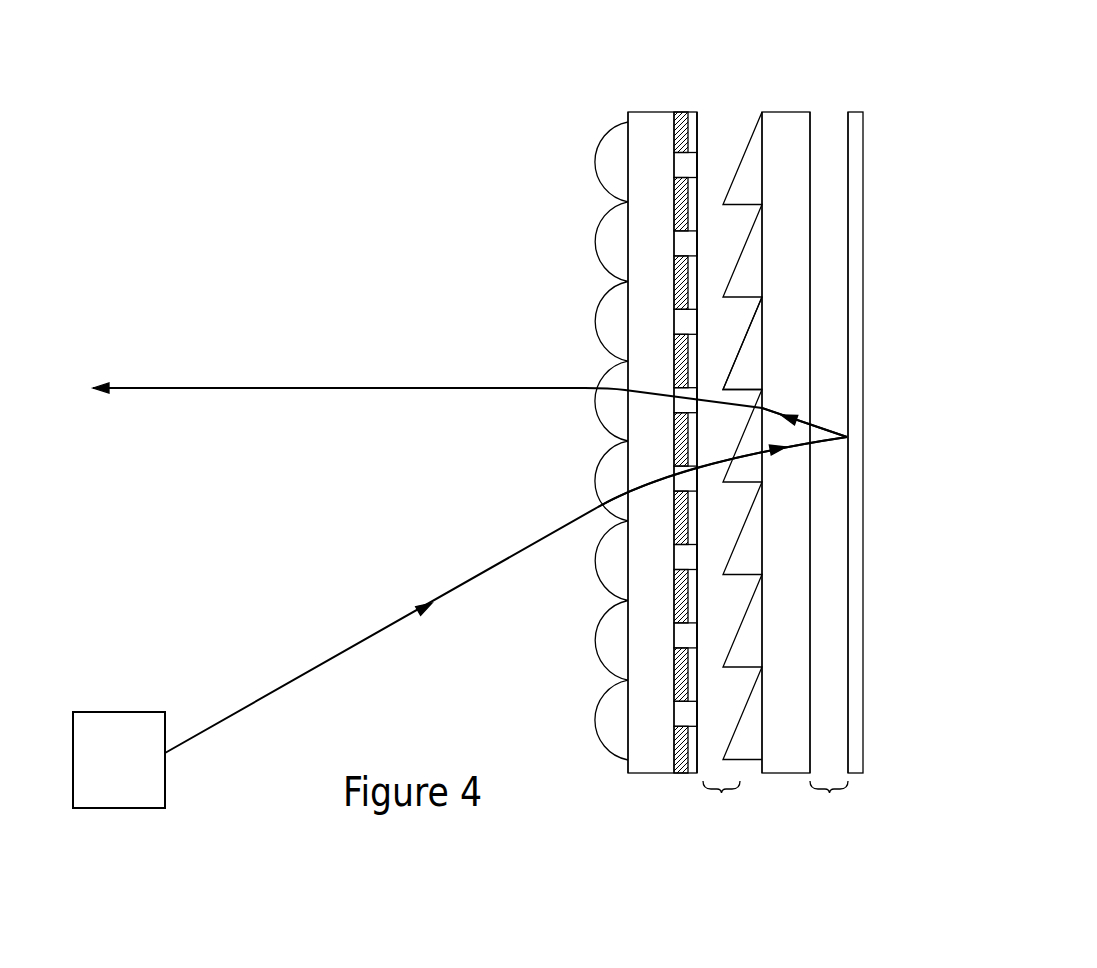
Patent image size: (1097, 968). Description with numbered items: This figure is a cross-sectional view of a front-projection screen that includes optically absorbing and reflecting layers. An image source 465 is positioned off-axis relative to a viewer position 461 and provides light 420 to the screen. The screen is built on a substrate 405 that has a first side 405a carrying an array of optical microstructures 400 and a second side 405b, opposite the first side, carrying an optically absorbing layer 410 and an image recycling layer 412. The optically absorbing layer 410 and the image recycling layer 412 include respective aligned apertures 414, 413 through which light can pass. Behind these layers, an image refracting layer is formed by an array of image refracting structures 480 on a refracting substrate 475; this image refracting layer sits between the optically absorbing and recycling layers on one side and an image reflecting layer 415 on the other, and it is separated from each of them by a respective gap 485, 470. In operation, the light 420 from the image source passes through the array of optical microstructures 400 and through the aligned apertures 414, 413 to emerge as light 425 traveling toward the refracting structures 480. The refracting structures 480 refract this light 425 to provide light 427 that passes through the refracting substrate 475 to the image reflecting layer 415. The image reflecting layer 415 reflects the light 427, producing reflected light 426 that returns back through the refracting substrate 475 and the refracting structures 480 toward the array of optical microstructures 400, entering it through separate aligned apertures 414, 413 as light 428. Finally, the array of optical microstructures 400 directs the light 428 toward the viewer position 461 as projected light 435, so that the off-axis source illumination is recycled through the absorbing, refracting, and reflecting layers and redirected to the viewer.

The array of optical microstructures 400 is at (610, 133).
The substrate 405 is at (643, 110).
The first side of the substrate 405a is at (628, 151).
The second side of the substrate 405b is at (683, 183).
The optically absorbing layer 410 is at (680, 110).
The image recycling layer 412 is at (692, 110).
The aperture 413 is at (698, 165).
The aperture 414 is at (674, 167).
The image reflecting layer 415 is at (855, 113).
The light 420 is at (375, 637).
The light 425 is at (651, 483).
The reflected light 426 is at (818, 422).
The light 427 is at (795, 445).
The light 428 is at (723, 398).
The projected light 435 is at (338, 385).
The viewer position 461 is at (58, 373).
The image source 465 is at (100, 801).
The gap 470 is at (829, 467).
The refracting substrate 475 is at (798, 125).
The image refracting structures 480 is at (752, 147).
The gap 485 is at (729, 467).